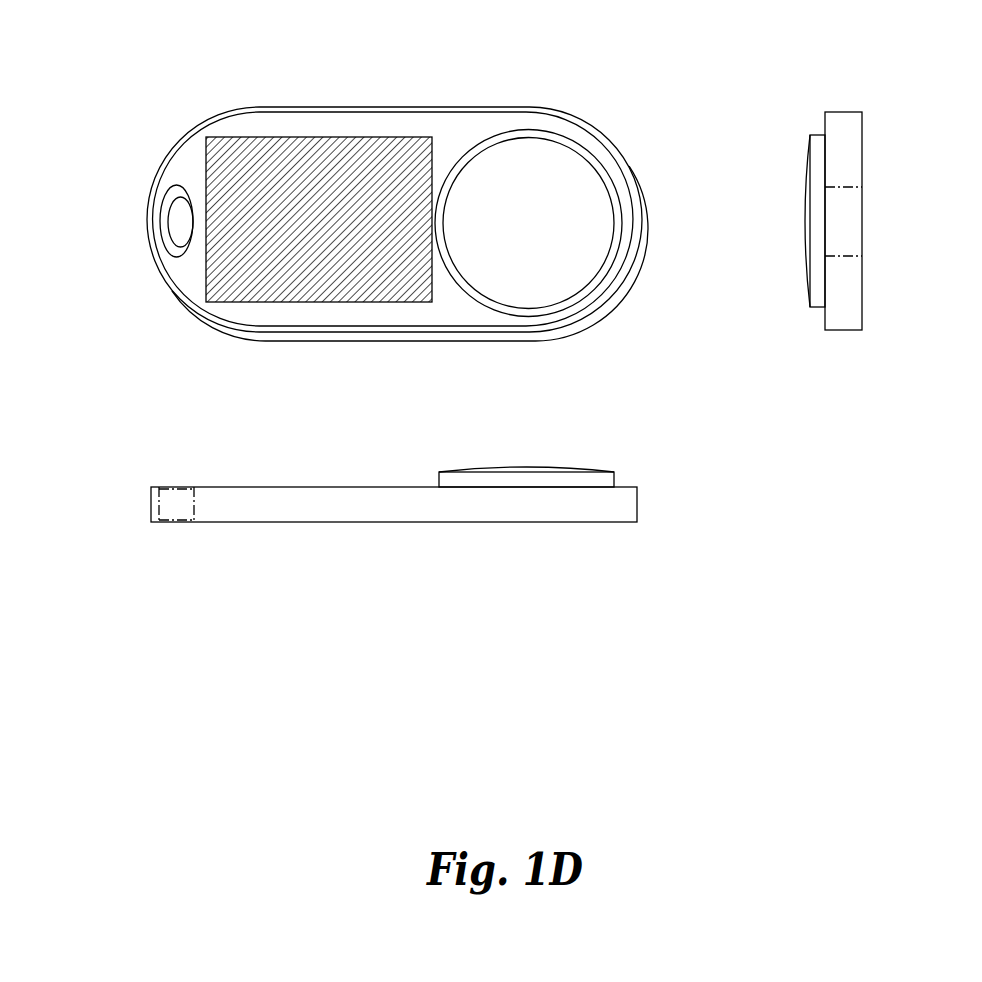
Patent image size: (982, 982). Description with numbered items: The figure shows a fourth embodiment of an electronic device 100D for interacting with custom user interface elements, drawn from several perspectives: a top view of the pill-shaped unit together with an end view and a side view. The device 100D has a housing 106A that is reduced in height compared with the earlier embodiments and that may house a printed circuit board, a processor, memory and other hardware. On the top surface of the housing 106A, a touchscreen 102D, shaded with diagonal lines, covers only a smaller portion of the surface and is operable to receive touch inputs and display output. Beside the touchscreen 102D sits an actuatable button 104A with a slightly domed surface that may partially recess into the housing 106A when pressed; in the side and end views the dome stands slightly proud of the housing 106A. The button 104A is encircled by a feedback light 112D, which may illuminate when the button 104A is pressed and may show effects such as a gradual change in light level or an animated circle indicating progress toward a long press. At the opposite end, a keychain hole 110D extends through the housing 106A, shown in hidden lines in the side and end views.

The electronic device 100D is at (238, 88).
The touchscreen 102D is at (243, 187).
The button 104A is at (525, 183).
The housing 106A is at (272, 340).
The keychain hole 110D is at (157, 232).
The feedback light 112D is at (585, 287).